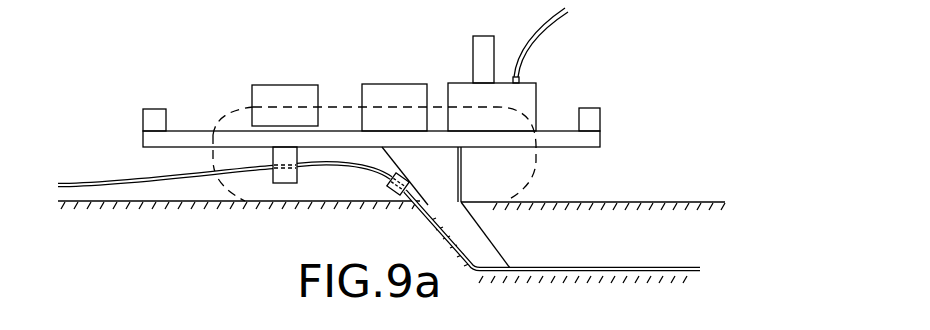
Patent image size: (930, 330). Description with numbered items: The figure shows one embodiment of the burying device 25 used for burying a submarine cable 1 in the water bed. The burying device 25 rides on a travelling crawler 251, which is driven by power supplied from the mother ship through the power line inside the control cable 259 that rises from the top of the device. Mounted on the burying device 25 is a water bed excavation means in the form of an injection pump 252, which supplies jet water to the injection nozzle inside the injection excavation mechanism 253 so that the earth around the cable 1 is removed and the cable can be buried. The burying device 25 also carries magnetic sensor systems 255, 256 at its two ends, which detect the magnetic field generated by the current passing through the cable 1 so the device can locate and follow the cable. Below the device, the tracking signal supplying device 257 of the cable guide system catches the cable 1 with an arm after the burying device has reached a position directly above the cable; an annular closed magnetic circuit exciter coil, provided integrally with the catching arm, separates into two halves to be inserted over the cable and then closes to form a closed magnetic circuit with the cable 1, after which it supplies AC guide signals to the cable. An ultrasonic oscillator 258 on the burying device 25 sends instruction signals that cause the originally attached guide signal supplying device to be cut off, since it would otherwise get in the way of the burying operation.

The cable 1 is at (89, 189).
The burying device 25 is at (331, 100).
The travelling crawler 251 is at (220, 129).
The injection pump 252 is at (392, 84).
The injection excavation mechanism 253 is at (440, 209).
The magnetic sensor system 255 is at (178, 110).
The magnetic sensor system 256 is at (593, 108).
The tracking signal supplying device 257 is at (289, 183).
The ultrasonic oscillator 258 is at (508, 26).
The control cable 259 is at (552, 29).